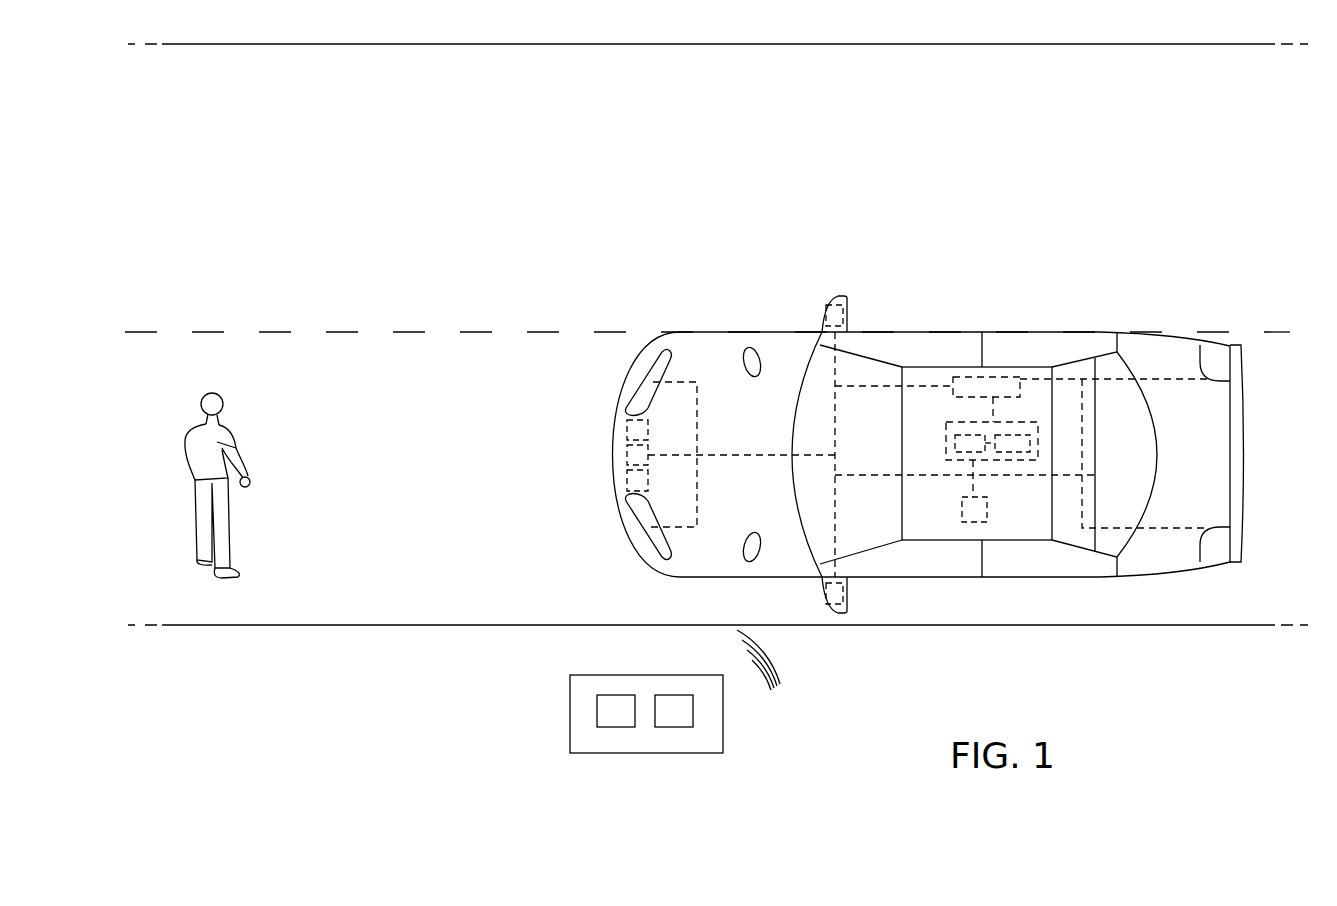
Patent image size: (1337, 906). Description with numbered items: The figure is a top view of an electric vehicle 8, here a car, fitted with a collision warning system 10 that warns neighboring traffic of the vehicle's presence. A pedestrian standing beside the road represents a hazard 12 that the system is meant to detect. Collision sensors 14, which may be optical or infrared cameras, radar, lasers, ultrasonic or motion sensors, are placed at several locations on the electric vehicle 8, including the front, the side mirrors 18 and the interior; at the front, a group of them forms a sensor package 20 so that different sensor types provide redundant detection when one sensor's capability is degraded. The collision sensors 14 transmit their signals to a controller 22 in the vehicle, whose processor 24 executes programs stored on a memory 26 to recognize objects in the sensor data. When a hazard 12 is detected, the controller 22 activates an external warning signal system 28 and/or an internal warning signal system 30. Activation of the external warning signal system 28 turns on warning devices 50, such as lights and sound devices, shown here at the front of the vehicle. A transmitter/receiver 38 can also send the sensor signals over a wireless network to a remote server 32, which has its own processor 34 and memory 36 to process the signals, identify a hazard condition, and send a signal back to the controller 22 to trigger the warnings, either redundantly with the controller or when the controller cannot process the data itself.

The electric vehicle 8 is at (923, 302).
The collision warning system 10 is at (880, 635).
The hazard 12 is at (250, 418).
The collision sensors 14 is at (624, 482).
The side mirrors 18 is at (837, 300).
The sensor package 20 is at (664, 447).
The controller 22 is at (995, 460).
The processor 24 is at (955, 436).
The memory 26 is at (1017, 462).
The external warning signal system 28 is at (940, 517).
The internal warning signal system 30 is at (712, 303).
The remote server 32 is at (723, 713).
The processor 34 is at (615, 695).
The memory 36 is at (675, 695).
The transmitter/receiver 38 is at (970, 378).
The warning devices 50 is at (645, 385).